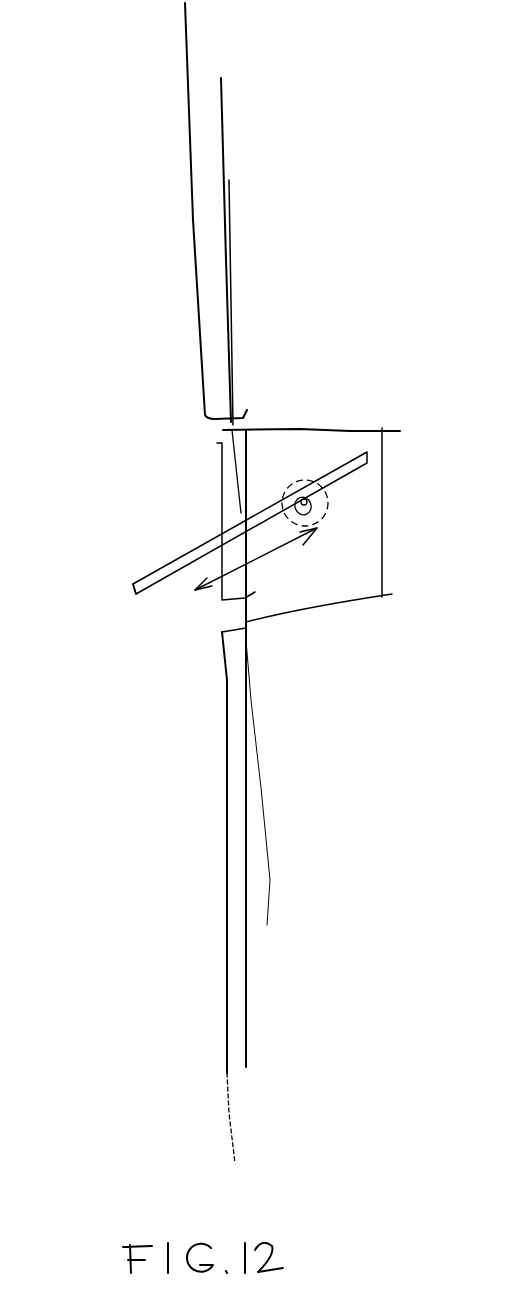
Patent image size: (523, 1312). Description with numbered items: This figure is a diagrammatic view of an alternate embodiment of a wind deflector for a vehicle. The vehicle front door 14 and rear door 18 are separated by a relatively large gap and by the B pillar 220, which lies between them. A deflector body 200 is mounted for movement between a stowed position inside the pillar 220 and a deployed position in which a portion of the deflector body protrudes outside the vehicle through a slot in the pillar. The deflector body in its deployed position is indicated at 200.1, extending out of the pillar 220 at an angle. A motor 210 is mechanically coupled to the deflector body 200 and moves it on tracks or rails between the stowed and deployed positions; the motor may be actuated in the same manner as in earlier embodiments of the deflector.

The front door 14 is at (180, 218).
The rear door 18 is at (220, 723).
The deflector body 200 is at (330, 465).
The deflector body in deployed position 200.1 is at (137, 580).
The motor 210 is at (333, 513).
The B pillar 220 is at (310, 610).